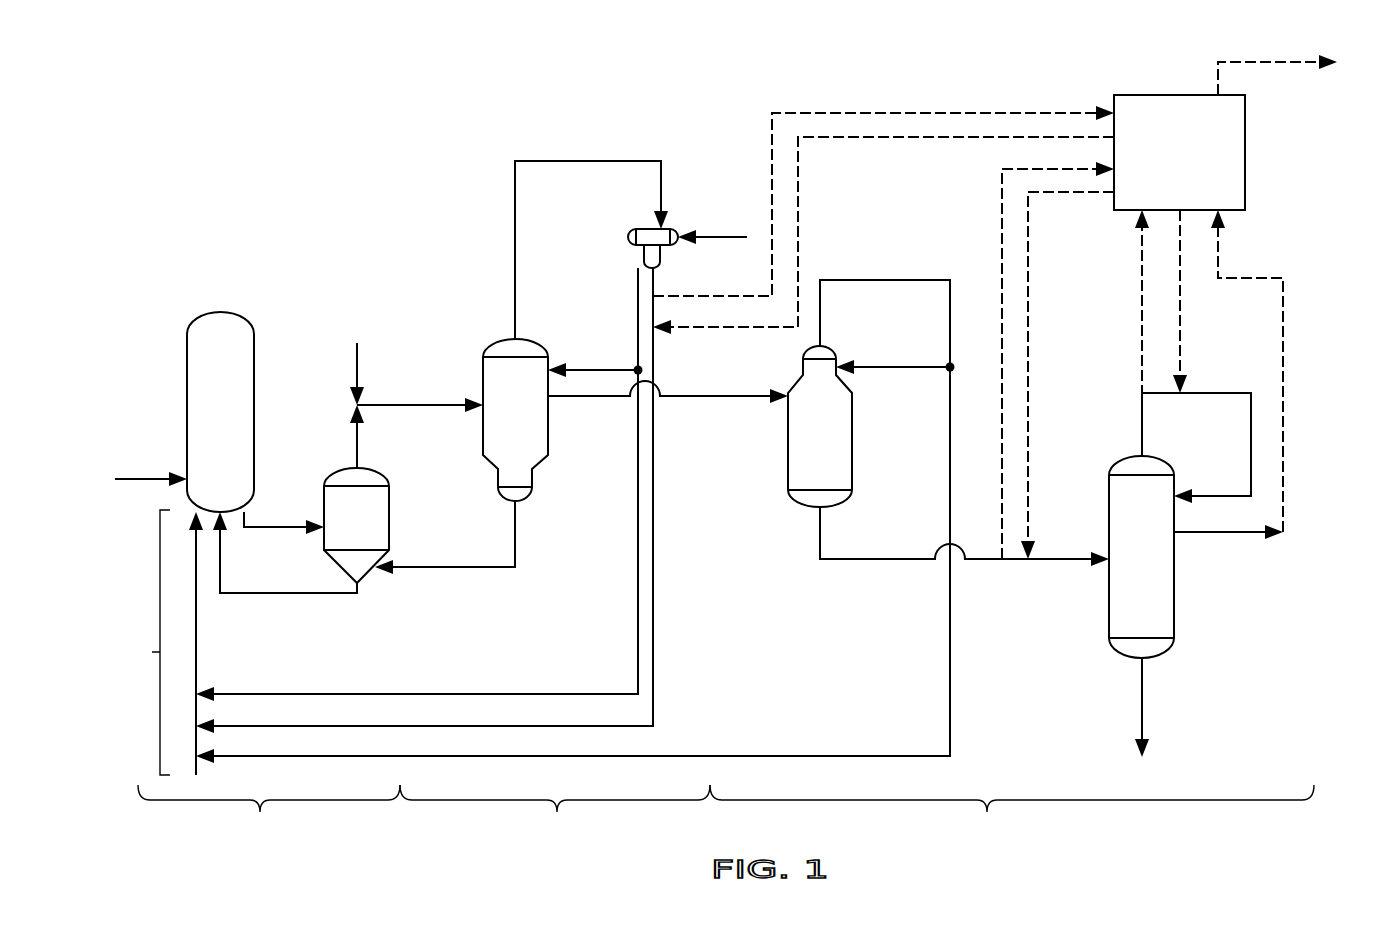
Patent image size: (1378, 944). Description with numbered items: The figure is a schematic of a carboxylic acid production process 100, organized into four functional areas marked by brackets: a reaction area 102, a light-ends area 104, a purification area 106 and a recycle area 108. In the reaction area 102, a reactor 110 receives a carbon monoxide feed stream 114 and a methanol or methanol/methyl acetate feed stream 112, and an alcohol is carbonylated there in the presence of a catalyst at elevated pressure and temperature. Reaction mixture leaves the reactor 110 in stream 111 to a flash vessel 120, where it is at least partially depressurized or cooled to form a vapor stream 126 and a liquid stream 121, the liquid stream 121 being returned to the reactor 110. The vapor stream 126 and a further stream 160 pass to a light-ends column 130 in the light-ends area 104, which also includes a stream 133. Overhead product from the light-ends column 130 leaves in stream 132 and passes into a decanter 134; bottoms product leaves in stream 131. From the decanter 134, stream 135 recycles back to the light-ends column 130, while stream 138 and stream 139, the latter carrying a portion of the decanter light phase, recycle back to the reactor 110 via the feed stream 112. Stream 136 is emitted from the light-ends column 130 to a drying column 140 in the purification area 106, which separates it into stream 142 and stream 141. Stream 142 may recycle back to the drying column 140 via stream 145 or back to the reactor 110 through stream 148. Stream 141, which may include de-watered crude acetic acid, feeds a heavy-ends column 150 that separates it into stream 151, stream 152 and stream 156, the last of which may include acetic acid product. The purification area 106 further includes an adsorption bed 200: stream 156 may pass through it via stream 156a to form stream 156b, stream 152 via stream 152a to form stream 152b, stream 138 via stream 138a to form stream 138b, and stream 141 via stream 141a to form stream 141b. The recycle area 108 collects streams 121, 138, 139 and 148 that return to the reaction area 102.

The carboxylic acid production process 100 is at (253, 158).
The reaction area 102 is at (269, 815).
The light-ends area 104 is at (555, 815).
The purification area 106 is at (1012, 815).
The recycle area 108 is at (138, 642).
The reactor 110 is at (187, 338).
The stream 111 is at (267, 527).
The methanol or methanol/methyl acetate feed stream 112 is at (197, 657).
The carbon monoxide feed stream 114 is at (143, 472).
The flash vessel 120 is at (328, 470).
The liquid stream 121 is at (300, 595).
The vapor stream 126 is at (415, 407).
The light-ends column 130 is at (493, 343).
The stream 131 is at (423, 565).
The stream 132 is at (586, 161).
The stream 133 is at (722, 235).
The decanter 134 is at (645, 229).
The stream 135 is at (592, 367).
The stream 136 is at (713, 400).
The stream 138 is at (653, 517).
The stream 138a is at (898, 113).
The stream 138b is at (884, 137).
The stream 139 is at (635, 495).
The drying column 140 is at (802, 376).
The stream 141 is at (882, 561).
The stream 141a is at (1002, 212).
The stream 141b is at (1028, 270).
The stream 142 is at (885, 279).
The stream 145 is at (902, 366).
The stream 148 is at (950, 478).
The heavy-ends column 150 is at (1108, 502).
The stream 151 is at (1142, 682).
The stream 152 is at (1225, 395).
The stream 152a is at (1142, 325).
The stream 152b is at (1180, 325).
The stream 156 is at (1225, 533).
The stream 156a is at (1285, 325).
The stream 156b is at (1287, 62).
The stream 160 is at (353, 365).
The adsorption bed 200 is at (1179, 152).